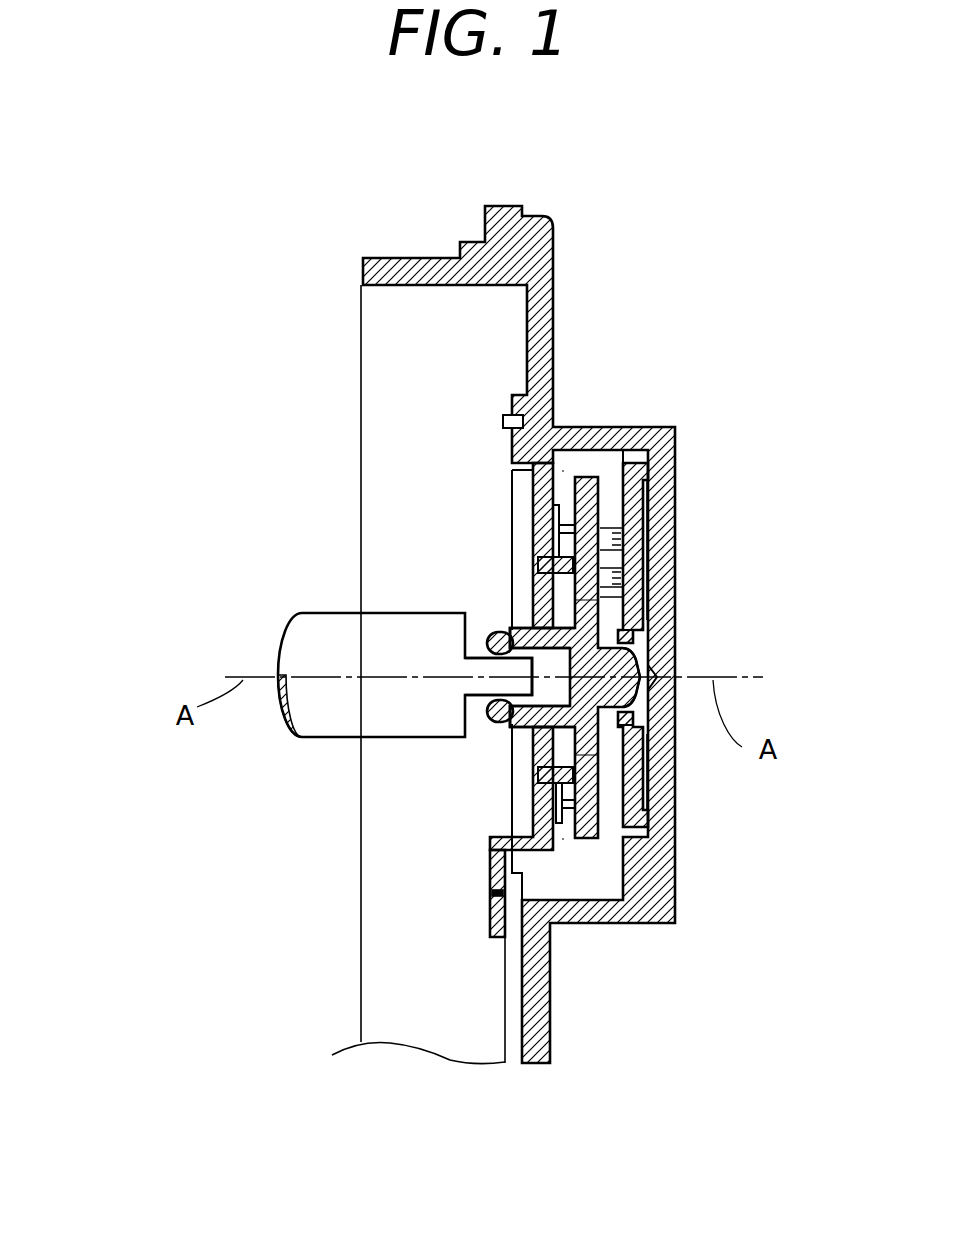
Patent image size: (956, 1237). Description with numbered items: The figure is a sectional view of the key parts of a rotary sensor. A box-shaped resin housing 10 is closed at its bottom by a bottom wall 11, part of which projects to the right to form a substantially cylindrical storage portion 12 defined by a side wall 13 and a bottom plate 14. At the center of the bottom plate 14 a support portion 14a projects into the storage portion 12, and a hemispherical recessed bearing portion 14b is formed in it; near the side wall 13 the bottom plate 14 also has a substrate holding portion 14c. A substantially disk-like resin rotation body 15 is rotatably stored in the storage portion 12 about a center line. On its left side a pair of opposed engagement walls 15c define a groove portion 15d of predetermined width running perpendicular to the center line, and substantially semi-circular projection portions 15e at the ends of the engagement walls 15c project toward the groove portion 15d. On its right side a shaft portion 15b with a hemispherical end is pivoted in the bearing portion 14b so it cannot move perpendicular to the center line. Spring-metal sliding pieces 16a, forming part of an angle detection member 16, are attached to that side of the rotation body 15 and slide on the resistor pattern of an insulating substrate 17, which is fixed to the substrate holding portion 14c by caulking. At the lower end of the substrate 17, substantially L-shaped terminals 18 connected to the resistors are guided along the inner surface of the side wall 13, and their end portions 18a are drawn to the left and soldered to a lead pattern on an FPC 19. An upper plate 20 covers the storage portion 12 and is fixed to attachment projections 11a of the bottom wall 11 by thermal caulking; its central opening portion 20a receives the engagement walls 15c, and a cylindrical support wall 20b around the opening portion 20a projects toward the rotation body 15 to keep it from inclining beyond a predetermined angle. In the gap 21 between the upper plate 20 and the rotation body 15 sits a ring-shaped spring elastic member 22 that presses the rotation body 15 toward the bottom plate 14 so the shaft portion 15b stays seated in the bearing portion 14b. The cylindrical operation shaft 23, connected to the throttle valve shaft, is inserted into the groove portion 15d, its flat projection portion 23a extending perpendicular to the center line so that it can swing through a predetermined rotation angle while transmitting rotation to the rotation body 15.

The housing 10 is at (352, 268).
The bottom wall 11 is at (516, 322).
The attachment projections 11a is at (508, 412).
The storage portion 12 is at (630, 920).
The side wall 13 is at (656, 438).
The bottom plate 14 is at (680, 578).
The support portion 14a is at (634, 640).
The bearing portion 14b is at (650, 666).
The substrate holding portion 14c is at (650, 462).
The rotation body 15 is at (585, 468).
The shaft portion 15b is at (645, 672).
The engagement walls 15c is at (545, 607).
The groove portion 15d is at (540, 705).
The projection portions 15e is at (487, 628).
The angle detection member 16 is at (634, 510).
The sliding pieces 16a is at (616, 510).
The substrate 17 is at (650, 523).
The terminals 18 is at (610, 860).
The end portions 18a is at (493, 895).
The FPC 19 is at (518, 985).
The upper plate 20 is at (530, 487).
The opening portion 20a is at (512, 800).
The support wall 20b is at (548, 588).
The gap 21 is at (565, 518).
The elastic member 22 is at (548, 512).
The operation shaft 23 is at (300, 648).
The flat projection portion 23a is at (527, 668).